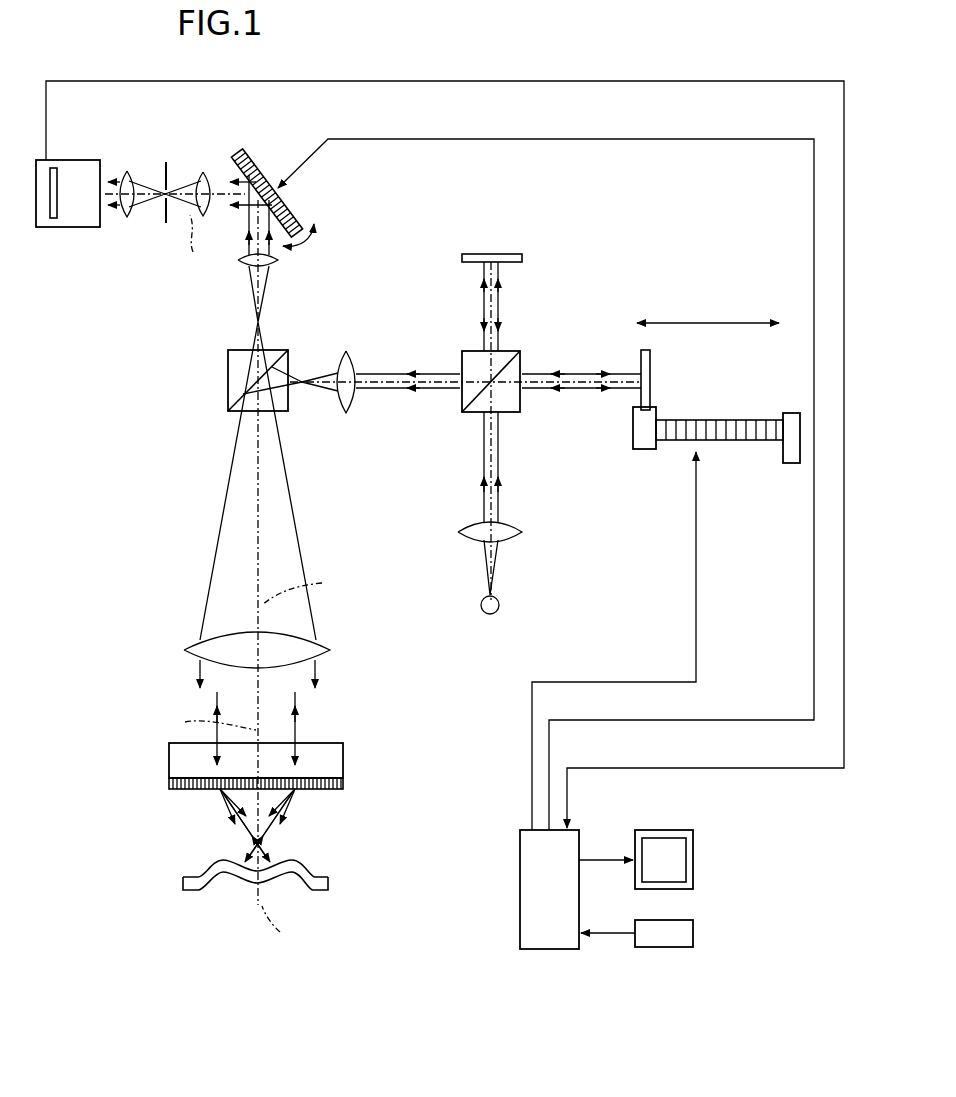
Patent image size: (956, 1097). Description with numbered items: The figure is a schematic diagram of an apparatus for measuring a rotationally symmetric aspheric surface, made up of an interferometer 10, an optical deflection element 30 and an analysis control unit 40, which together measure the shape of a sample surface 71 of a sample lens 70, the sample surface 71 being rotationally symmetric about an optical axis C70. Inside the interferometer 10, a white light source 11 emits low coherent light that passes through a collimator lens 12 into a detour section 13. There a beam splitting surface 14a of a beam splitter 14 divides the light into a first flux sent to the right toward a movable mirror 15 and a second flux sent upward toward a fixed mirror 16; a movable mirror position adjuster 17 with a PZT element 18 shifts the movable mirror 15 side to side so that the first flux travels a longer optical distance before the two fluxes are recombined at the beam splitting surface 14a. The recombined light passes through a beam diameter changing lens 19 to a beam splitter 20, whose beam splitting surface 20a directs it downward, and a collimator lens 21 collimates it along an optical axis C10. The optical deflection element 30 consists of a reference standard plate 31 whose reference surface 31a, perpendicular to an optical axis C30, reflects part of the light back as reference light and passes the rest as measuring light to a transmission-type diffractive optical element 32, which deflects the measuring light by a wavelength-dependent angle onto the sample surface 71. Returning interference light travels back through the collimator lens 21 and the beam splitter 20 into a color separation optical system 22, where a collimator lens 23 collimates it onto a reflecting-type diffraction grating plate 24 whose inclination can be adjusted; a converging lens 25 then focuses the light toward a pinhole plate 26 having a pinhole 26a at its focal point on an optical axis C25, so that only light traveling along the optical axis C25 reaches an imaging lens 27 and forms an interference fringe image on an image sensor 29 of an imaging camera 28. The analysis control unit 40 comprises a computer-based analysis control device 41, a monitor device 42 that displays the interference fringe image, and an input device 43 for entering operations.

The interferometer 10 is at (510, 63).
The white light source 11 is at (500, 605).
The collimator lens 12 is at (523, 532).
The detour section 13 is at (616, 531).
The beam splitter 14 is at (516, 346).
The beam splitting surface 14a is at (475, 408).
The movable mirror 15 is at (648, 350).
The fixed mirror 16 is at (523, 256).
The movable mirror position adjuster 17 is at (719, 410).
The PZT element 18 is at (733, 441).
The beam diameter changing lens 19 is at (351, 352).
The beam splitter 20 is at (282, 346).
The beam splitting surface 20a is at (235, 408).
The collimator lens 21 is at (331, 650).
The color separation optical system 22 is at (259, 149).
The collimator lens 23 is at (279, 262).
The reflecting-type diffraction grating plate 24 is at (292, 218).
The converging lens 25 is at (204, 171).
The pinhole plate 26 is at (155, 160).
The pinhole 26a is at (166, 200).
The imaging lens 27 is at (127, 218).
The imaging camera 28 is at (76, 159).
The image sensor 29 is at (55, 219).
The optical deflection element 30 is at (294, 750).
The reference standard plate 31 is at (344, 757).
The reference surface 31a is at (310, 777).
The diffractive optical element 32 is at (344, 787).
The analysis control unit 40 is at (620, 871).
The analysis control device 41 is at (519, 906).
The monitor device 42 is at (673, 829).
The input device 43 is at (694, 936).
The sample lens 70 is at (283, 855).
The sample surface 71 is at (302, 862).
The optical axis C10 is at (308, 588).
The optical axis C25 is at (193, 246).
The optical axis C30 is at (203, 722).
The optical axis C70 is at (287, 927).